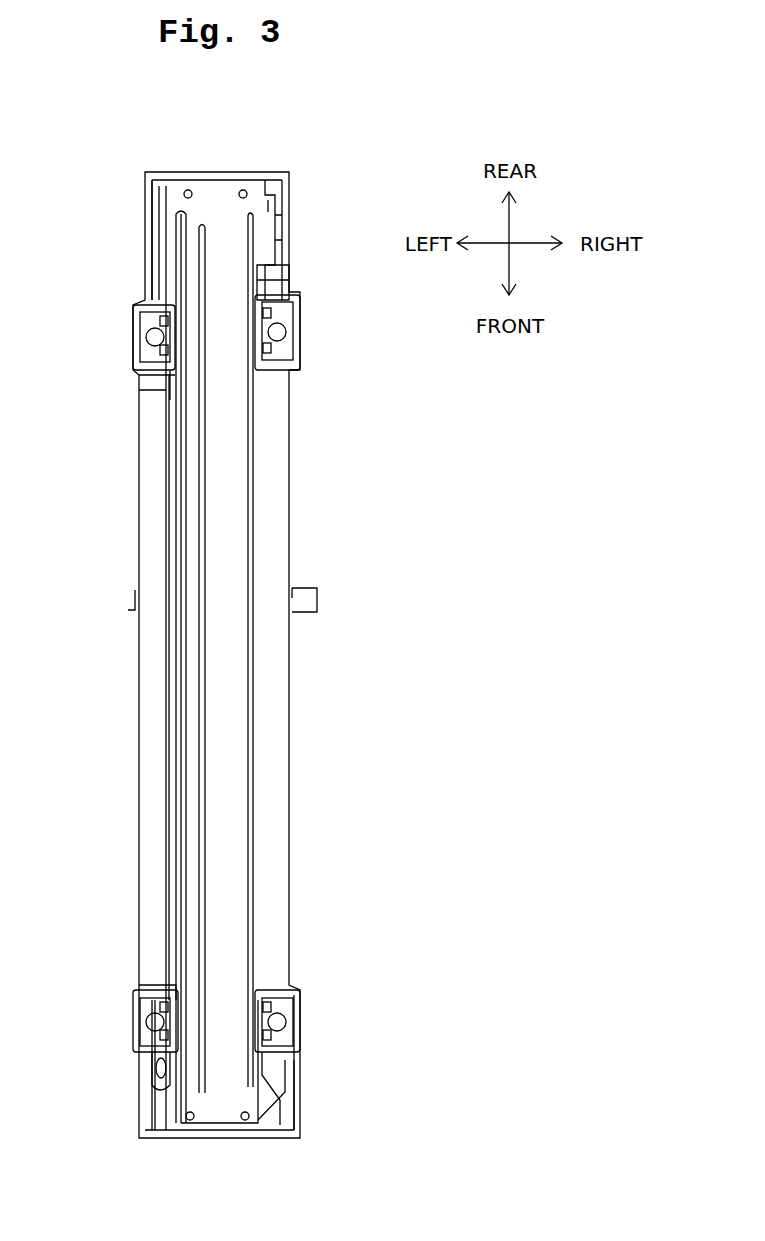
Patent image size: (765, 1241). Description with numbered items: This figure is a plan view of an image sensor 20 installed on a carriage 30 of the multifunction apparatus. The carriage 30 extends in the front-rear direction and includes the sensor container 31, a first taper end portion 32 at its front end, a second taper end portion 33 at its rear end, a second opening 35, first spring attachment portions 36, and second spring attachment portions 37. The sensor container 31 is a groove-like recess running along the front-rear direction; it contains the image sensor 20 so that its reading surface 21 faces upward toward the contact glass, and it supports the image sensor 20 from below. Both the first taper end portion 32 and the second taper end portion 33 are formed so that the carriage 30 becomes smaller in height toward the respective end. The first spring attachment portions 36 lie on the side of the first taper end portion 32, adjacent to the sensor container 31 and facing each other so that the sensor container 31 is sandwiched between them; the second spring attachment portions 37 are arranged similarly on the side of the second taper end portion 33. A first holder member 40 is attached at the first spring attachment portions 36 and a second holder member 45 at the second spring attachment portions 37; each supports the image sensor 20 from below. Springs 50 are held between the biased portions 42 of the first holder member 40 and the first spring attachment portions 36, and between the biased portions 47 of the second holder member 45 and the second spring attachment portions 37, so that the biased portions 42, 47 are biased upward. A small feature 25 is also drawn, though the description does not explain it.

The image sensor 20 is at (218, 195).
The reading surface 21 is at (230, 502).
The positioning tab 25 is at (300, 596).
The carriage 30 is at (285, 180).
The sensor container 31 is at (168, 560).
The first taper end portion 32 is at (317, 1102).
The second taper end portion 33 is at (143, 180).
The second opening 35 is at (152, 230).
The first spring attachment portions 36 is at (152, 1072).
The second spring attachment portions 37 is at (290, 305).
The first holder member 40 is at (140, 990).
The biased portions 42 is at (133, 1010).
The second holder member 45 is at (140, 385).
The biased portions 47 is at (140, 312).
The springs 50 is at (133, 352).